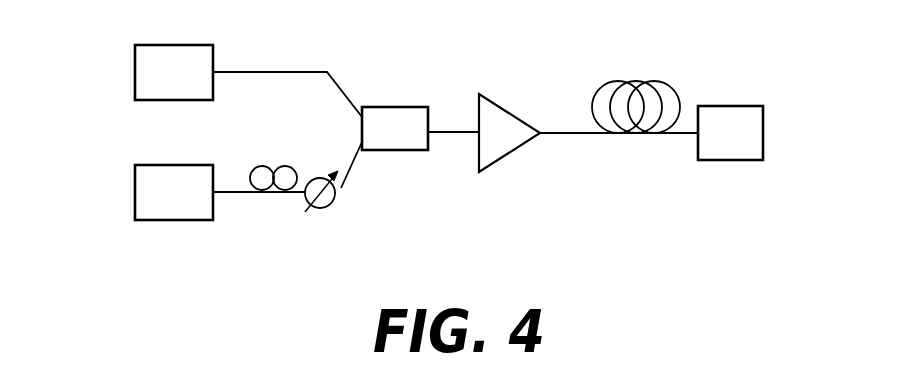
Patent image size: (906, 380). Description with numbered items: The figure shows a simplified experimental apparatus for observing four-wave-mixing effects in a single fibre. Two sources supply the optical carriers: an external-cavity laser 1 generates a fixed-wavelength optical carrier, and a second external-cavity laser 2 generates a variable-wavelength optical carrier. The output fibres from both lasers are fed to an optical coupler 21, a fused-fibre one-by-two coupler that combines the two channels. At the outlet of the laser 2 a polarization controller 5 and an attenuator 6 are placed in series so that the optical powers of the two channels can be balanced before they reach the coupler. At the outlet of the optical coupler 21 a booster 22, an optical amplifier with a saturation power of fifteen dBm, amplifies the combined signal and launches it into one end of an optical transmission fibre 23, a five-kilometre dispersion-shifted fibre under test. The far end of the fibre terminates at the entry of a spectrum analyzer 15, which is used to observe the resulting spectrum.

The external-cavity laser 1 is at (160, 77).
The external-cavity laser 2 is at (163, 195).
The polarization controller 5 is at (259, 176).
The attenuator 6 is at (332, 208).
The optical coupler 21 is at (393, 133).
The booster 22 is at (510, 123).
The optical transmission fibre 23 is at (633, 83).
The spectrum analyzer 15 is at (730, 147).